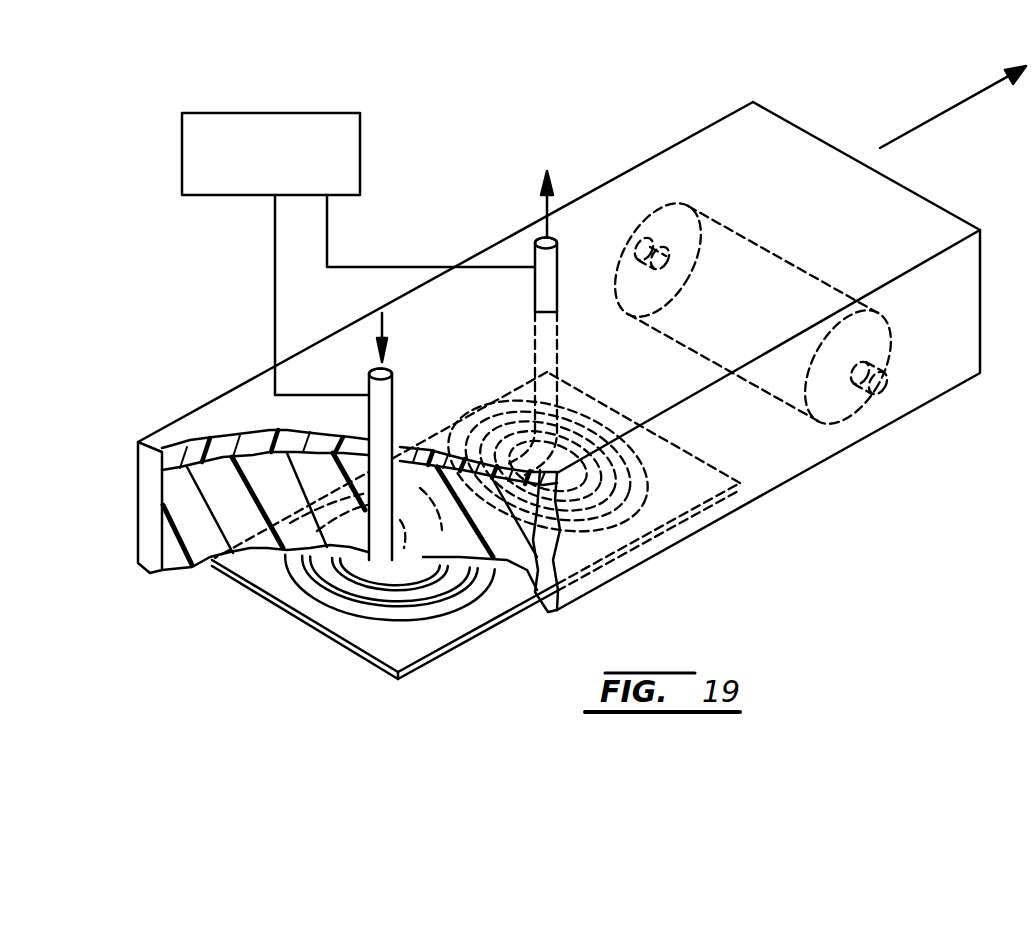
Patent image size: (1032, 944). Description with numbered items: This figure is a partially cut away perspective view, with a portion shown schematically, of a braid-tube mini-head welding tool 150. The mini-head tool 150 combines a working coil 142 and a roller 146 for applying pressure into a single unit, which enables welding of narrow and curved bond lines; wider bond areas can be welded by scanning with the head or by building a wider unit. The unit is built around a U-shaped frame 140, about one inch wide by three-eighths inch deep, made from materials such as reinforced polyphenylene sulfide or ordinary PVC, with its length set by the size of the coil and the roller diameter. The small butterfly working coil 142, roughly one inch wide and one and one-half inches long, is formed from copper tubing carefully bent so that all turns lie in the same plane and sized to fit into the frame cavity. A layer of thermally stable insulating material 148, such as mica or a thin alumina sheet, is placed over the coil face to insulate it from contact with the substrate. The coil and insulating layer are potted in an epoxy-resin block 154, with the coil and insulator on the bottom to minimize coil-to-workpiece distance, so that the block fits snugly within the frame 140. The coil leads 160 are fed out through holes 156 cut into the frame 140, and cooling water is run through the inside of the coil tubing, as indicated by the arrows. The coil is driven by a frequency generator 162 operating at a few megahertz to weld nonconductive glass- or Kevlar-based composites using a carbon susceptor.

The U-shaped frame 140 is at (237, 408).
The working coil 142 is at (320, 585).
The roller 146 is at (753, 273).
The insulating material 148 is at (373, 635).
The mini-head tool 150 is at (535, 122).
The epoxy-resin block 154 is at (263, 492).
The holes 156 is at (535, 313).
The coil leads 160 is at (548, 260).
The frequency generator 162 is at (245, 128).